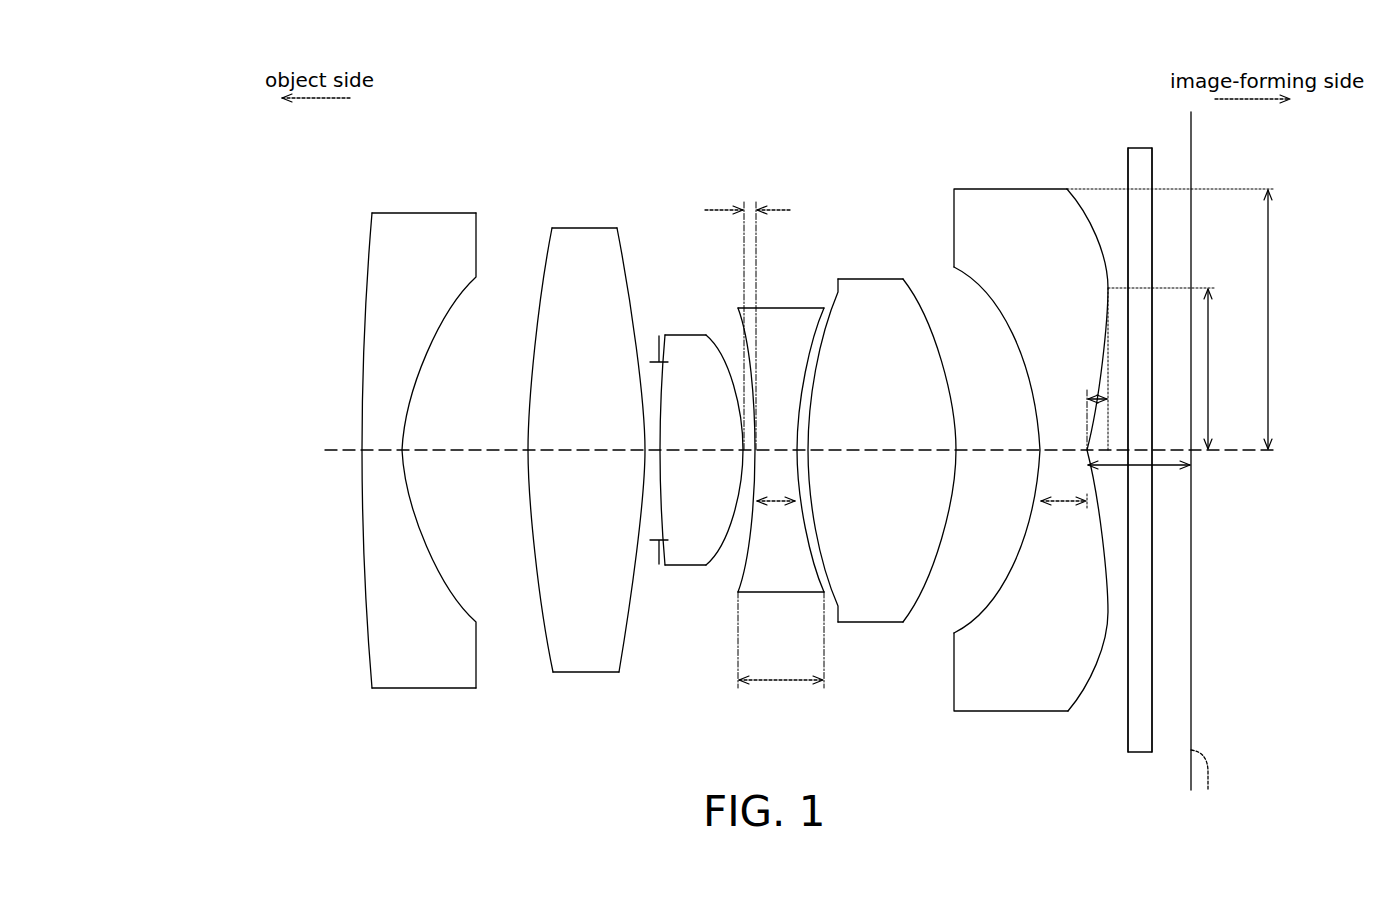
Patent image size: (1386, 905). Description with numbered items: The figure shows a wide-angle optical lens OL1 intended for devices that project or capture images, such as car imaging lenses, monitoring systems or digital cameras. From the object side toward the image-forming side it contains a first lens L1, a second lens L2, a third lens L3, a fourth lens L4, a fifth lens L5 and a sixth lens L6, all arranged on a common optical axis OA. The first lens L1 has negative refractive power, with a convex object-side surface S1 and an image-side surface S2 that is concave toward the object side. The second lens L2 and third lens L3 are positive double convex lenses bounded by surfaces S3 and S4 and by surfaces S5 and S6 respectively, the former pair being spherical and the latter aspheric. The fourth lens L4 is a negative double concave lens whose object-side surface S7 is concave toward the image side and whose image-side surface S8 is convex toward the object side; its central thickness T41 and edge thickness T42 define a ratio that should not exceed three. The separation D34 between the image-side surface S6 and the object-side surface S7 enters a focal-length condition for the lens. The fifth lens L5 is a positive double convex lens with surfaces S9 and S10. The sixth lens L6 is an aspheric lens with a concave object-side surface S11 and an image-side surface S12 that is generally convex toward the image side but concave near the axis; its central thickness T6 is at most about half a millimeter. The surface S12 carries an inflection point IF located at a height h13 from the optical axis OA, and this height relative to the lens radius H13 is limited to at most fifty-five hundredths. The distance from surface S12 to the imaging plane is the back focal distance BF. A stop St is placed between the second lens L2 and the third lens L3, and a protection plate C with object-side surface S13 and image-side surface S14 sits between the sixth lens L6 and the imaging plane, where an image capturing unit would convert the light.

The optical lens OL1 is at (203, 61).
The first lens L1 is at (424, 690).
The second lens L2 is at (585, 673).
The third lens L3 is at (682, 566).
The fourth lens L4 is at (780, 593).
The fifth lens L5 is at (868, 623).
The sixth lens L6 is at (1008, 712).
The object-side surface of the first lens S1 is at (370, 299).
The image-side surface of the first lens S2 is at (438, 334).
The object-side surface of the second lens S3 is at (537, 303).
The image-side surface of the second lens S4 is at (631, 289).
The object-side surface of the third lens S5 is at (658, 405).
The image-side surface of the third lens S6 is at (711, 338).
The object-side surface of the fourth lens S7 is at (740, 329).
The image-side surface of the fourth lens S8 is at (805, 382).
The object-side surface of the fifth lens S9 is at (831, 298).
The image-side surface of the fifth lens S10 is at (917, 308).
The object-side surface of the sixth lens S11 is at (1003, 317).
The image-side surface of the sixth lens S12 is at (1081, 198).
The object-side surface of the protection plate S13 is at (1125, 183).
The image-side surface of the protection plate S14 is at (1153, 183).
The stop St is at (656, 352).
The protection plate C is at (1140, 753).
The inflection point IF is at (1106, 288).
The optical axis OA is at (1225, 452).
The back focal distance BF is at (1139, 480).
The distance between third and fourth lenses D34 is at (747, 317).
The central thickness of the fourth lens T41 is at (776, 517).
The edge thickness of the fourth lens T42 is at (781, 653).
The central thickness of the sixth lens T6 is at (1064, 513).
The radius of the sixth lens H13 is at (1192, 319).
The distance between inflection point and optical axis h13 is at (1180, 368).